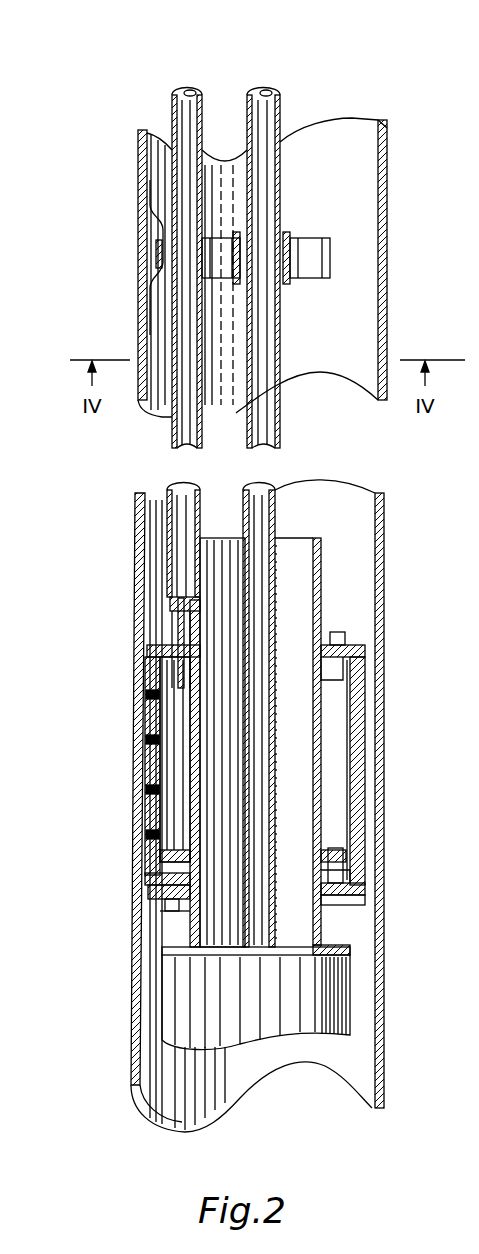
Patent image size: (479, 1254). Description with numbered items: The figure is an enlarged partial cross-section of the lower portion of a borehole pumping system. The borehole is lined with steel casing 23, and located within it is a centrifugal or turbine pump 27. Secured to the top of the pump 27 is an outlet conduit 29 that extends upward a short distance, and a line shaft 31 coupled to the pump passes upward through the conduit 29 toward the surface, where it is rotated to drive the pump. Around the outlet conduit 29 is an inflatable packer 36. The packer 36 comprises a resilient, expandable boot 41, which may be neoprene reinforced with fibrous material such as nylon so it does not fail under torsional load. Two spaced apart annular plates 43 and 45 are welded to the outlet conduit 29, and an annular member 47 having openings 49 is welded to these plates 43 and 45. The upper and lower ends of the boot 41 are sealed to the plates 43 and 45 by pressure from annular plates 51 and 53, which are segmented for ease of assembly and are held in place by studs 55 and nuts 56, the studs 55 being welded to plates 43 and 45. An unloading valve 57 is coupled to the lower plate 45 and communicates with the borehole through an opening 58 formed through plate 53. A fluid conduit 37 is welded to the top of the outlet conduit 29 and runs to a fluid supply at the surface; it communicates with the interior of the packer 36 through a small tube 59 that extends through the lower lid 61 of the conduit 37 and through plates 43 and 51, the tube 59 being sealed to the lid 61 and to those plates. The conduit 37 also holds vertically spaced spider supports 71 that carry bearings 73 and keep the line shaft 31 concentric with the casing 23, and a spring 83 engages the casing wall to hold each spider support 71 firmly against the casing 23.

The steel casing 23 is at (388, 258).
The centrifugal pump 27 is at (162, 980).
The outlet conduit 29 is at (293, 558).
The line shaft 31 is at (262, 88).
The inflatable packer 36 is at (347, 593).
The fluid conduit 37 is at (167, 498).
The boot 41 is at (360, 762).
The annular plate 43 is at (352, 728).
The annular plate 45 is at (155, 873).
The annular member 47 is at (160, 750).
The openings 49 is at (163, 697).
The annular plate 51 is at (147, 653).
The annular plate 53 is at (170, 898).
The studs 55 is at (168, 838).
The nuts 56 is at (160, 910).
The unloading valve 57 is at (340, 850).
The opening 58 is at (335, 903).
The small tube 59 is at (172, 638).
The lower lid 61 is at (175, 606).
The spider supports 71 is at (312, 238).
The bearings 73 is at (284, 232).
The spring 83 is at (150, 238).